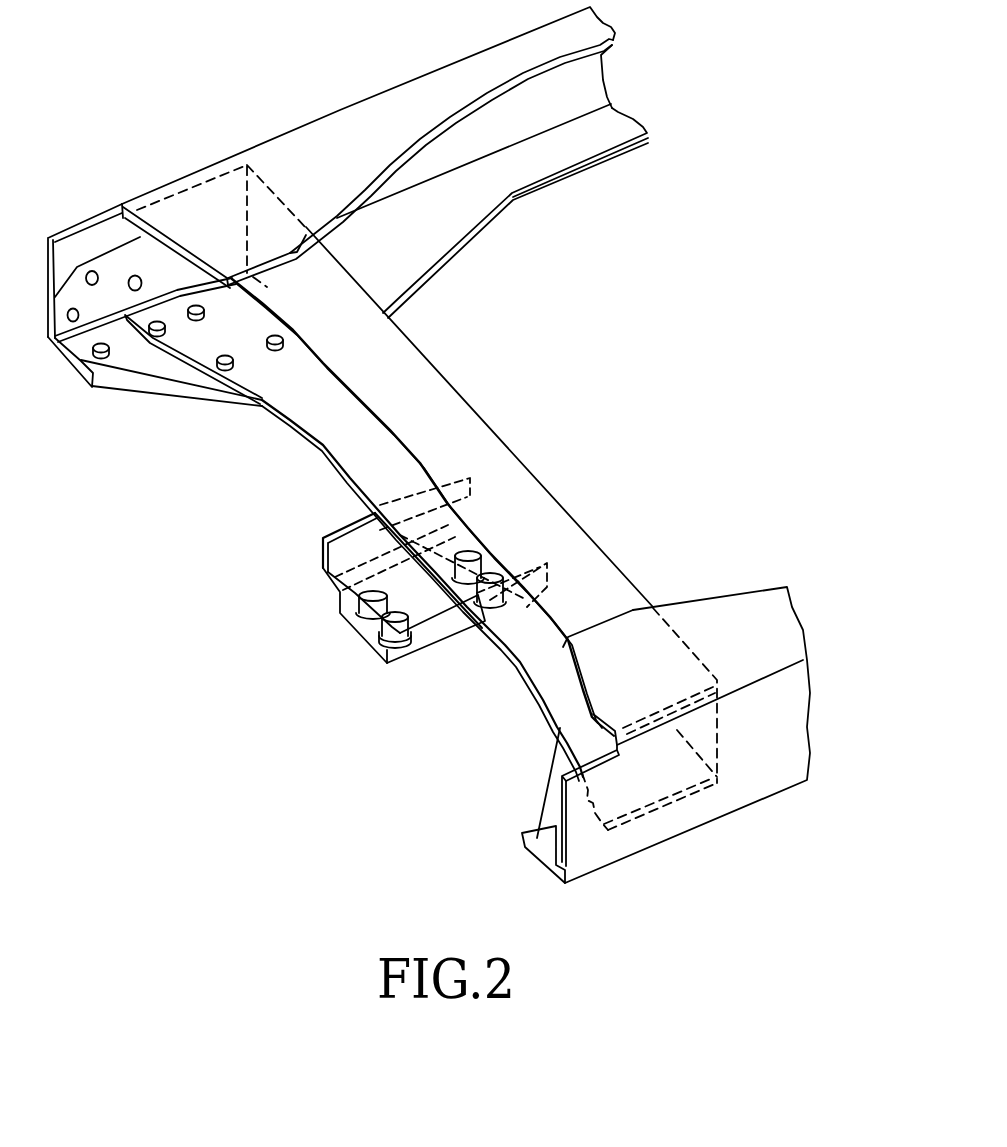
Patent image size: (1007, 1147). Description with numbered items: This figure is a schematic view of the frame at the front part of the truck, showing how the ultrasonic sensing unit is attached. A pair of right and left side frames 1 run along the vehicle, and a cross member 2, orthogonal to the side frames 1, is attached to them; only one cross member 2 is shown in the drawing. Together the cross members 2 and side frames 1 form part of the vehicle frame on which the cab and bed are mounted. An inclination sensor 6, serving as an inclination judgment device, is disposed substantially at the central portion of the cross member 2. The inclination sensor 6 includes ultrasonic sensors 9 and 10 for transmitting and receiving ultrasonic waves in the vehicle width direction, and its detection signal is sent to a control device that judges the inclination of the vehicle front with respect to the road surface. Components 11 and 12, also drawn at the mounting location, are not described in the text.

The side frame 1 is at (323, 133).
The cross member 2 is at (427, 380).
The inclination sensor 6 is at (380, 667).
The ultrasonic sensor 9 is at (358, 628).
The ultrasonic sensor 10 is at (492, 557).
The plate 11 is at (447, 645).
The bracket 12 is at (337, 557).